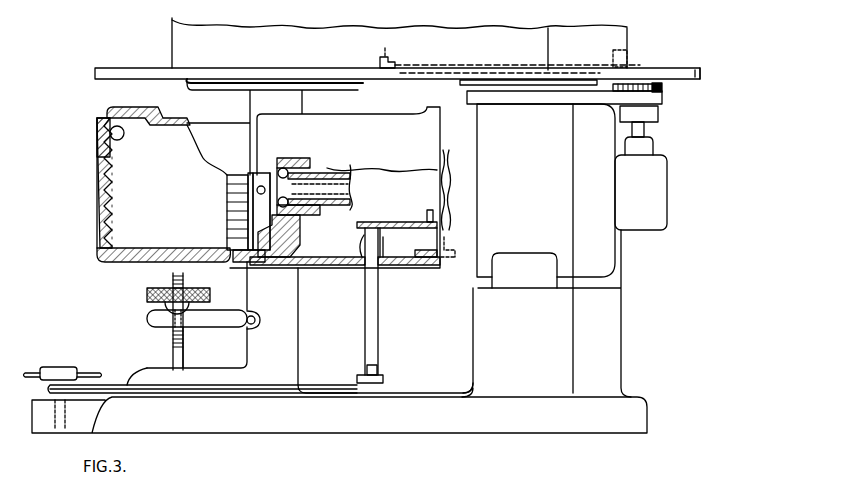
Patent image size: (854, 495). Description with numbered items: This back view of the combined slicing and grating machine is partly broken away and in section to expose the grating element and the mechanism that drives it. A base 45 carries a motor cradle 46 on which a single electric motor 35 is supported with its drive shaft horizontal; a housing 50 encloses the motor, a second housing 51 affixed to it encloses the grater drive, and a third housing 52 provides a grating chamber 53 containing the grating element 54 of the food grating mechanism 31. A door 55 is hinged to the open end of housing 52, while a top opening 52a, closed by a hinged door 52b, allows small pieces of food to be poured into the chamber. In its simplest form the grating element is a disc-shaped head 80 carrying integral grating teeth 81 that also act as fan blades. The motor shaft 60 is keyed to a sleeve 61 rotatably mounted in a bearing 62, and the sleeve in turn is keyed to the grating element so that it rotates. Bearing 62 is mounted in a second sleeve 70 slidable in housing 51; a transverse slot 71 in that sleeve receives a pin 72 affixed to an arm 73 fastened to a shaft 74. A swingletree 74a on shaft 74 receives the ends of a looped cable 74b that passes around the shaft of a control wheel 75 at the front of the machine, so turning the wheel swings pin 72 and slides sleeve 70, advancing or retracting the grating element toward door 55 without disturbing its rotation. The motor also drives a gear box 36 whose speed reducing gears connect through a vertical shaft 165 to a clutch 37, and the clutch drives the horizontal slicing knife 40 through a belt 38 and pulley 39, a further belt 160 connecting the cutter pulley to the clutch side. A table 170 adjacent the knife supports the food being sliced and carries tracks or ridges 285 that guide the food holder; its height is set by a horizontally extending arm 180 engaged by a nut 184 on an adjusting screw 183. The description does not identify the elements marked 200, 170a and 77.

The workpiece strip 200 is at (180, 42).
The table 170 is at (182, 72).
The table edge 170a is at (697, 78).
The tracks or ridges 285 is at (378, 62).
The slicing knife 40 is at (423, 67).
The pulley mechanism 39 is at (542, 87).
The belt 160 is at (590, 97).
The belt mechanism 38 is at (669, 97).
The clutch 37 is at (658, 115).
The vertical shaft 165 is at (644, 128).
The gear box 36 is at (657, 178).
The housing 50 is at (553, 202).
The electric motor 35 is at (608, 265).
The motor cradle 46 is at (556, 362).
The base 45 is at (392, 424).
The second housing 51 is at (357, 127).
The third housing 52 is at (220, 107).
The hinged door 52b is at (153, 95).
The opening 52a is at (111, 134).
The grating chamber 53 is at (126, 157).
The door 55 is at (96, 203).
The grating element 54 is at (226, 214).
The grating teeth 81 is at (230, 232).
The disc-shaped head 80 is at (243, 257).
The bearing 62 is at (313, 163).
The second sleeve 70 is at (365, 183).
The transverse slot 71 is at (425, 183).
The pin 72 is at (452, 217).
The motor shaft 60 is at (443, 182).
The arm 73 is at (388, 237).
The sleeve 61 is at (322, 200).
The bushing 77 is at (362, 247).
The shaft 74 is at (378, 313).
The swingletree 74a is at (385, 380).
The cable 74b is at (315, 390).
The food grating mechanism 31 is at (128, 277).
The nut 184 is at (150, 293).
The horizontally extending arm 180 is at (153, 320).
The adjusting screw 183 is at (175, 357).
The control wheel 75 is at (60, 370).